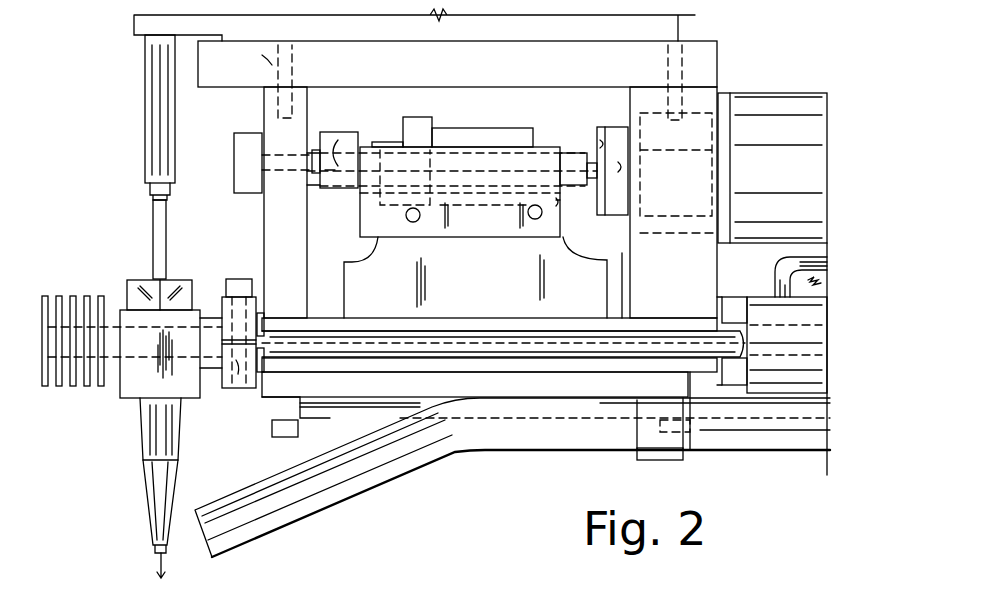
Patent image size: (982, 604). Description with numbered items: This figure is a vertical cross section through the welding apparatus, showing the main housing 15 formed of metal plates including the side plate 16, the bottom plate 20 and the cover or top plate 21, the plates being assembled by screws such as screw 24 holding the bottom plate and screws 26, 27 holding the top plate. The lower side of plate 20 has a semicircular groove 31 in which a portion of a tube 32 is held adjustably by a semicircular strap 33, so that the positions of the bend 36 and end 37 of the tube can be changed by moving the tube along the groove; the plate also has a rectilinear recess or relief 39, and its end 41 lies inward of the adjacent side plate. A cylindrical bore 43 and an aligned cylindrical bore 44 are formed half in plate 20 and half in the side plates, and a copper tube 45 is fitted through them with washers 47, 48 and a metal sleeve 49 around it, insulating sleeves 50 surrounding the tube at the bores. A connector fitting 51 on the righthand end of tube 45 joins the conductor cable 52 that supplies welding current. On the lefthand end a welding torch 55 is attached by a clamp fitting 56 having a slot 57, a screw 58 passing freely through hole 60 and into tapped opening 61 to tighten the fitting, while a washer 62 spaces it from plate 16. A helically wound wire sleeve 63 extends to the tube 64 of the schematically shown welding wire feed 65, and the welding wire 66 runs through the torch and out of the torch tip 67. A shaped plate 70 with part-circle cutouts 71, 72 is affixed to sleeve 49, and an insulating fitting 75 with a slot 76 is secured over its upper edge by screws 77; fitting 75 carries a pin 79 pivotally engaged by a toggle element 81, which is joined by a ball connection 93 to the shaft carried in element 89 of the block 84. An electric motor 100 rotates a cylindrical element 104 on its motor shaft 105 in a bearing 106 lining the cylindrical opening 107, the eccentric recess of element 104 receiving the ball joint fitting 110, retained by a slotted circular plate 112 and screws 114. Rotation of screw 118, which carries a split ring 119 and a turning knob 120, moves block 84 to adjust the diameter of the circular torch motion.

The main housing 15 is at (244, 236).
The plate 16 is at (262, 222).
The plate 20 is at (330, 445).
The cover or top plate 21 is at (705, 43).
The screw 24 is at (298, 430).
The screw 26 is at (272, 40).
The screw 27 is at (712, 73).
The semicircular groove 31 is at (375, 412).
The tube 32 is at (540, 452).
The semicircular strap 33 is at (655, 460).
The bend 36 is at (470, 452).
The end 37 is at (208, 557).
The rectilinear recess or relief 39 is at (410, 382).
The end 41 is at (698, 378).
The cylindrical bore 43 is at (690, 325).
The cylindrical bore 44 is at (307, 312).
The tube 45 is at (718, 375).
The washer 47 is at (310, 320).
The washer 48 is at (616, 318).
The metal sleeve 49 is at (466, 318).
The sleeve 50 is at (288, 326).
The connector fitting 51 is at (824, 289).
The conductor cable 52 is at (822, 258).
The welding torch 55 is at (89, 416).
The fitting 56 is at (228, 298).
The slot 57 is at (230, 344).
The screw 58 is at (240, 279).
The hole 60 is at (138, 280).
The tapped opening 61 is at (236, 400).
The washer 62 is at (250, 390).
The sleeve 63 is at (153, 225).
The tube 64 is at (145, 103).
The welding wire feed 65 is at (134, 29).
The welding wire or electrode 66 is at (158, 565).
The torch tip 67 is at (144, 492).
The shaped plate 70 is at (622, 272).
The part-circle cutout 71 is at (371, 250).
The part-circle cutout 72 is at (574, 250).
The fitting 75 is at (676, 432).
The slot 76 is at (362, 208).
The screw 77 is at (528, 214).
The pin 79 is at (318, 196).
The toggle element 81 is at (336, 133).
The block 84 is at (478, 128).
The element 89 is at (418, 117).
The spherical or ball connection 93 is at (358, 130).
The electric motor 100 is at (780, 93).
The cylindrical element 104 is at (603, 128).
The motor shaft 105 is at (742, 208).
The bearing 106 is at (700, 240).
The cylindrical opening 107 is at (740, 233).
The ball joint fitting 110 is at (622, 160).
The slotted circular plate 112 is at (597, 150).
The screw 114 is at (597, 140).
The screw 118 is at (262, 205).
The split ring 119 is at (316, 150).
The turning knob 120 is at (242, 133).